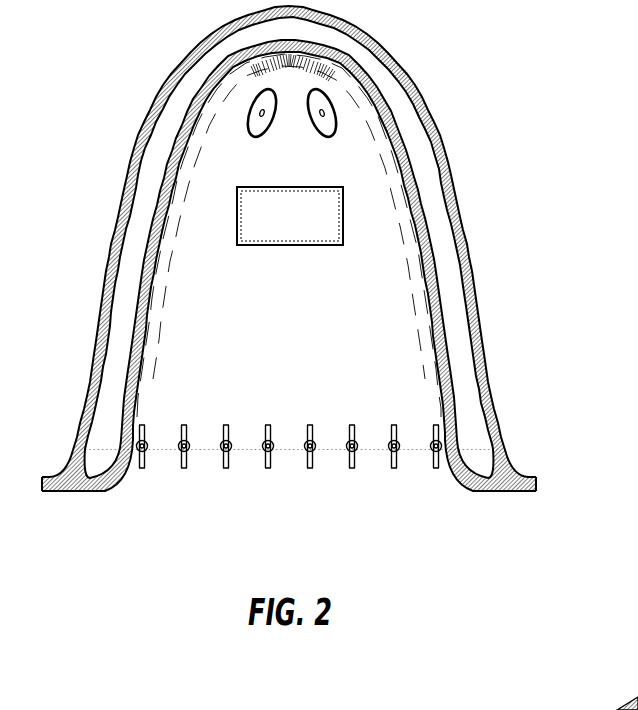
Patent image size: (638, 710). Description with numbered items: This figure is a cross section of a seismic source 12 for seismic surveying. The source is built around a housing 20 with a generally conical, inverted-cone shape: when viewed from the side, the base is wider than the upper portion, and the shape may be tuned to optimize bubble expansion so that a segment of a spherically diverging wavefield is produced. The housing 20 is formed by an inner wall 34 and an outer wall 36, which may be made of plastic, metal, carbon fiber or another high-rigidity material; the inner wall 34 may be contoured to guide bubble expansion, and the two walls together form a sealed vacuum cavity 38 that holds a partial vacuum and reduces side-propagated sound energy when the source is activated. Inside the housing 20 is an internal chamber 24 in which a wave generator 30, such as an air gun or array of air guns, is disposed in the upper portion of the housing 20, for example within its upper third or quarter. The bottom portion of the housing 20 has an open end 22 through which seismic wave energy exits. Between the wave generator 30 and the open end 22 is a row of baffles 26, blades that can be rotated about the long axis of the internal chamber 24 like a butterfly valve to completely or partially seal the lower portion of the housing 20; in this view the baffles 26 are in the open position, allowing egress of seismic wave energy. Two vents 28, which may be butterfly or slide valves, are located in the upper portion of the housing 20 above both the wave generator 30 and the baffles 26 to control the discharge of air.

The seismic source 12 is at (473, 68).
The housing 20 is at (162, 92).
The open end 22 is at (303, 507).
The internal chamber 24 is at (307, 369).
The baffles 26 is at (224, 444).
The vents 28 is at (264, 128).
The wave generator 30 is at (304, 227).
The inner wall 34 is at (445, 380).
The outer wall 36 is at (483, 355).
The vacuum cavity 38 is at (450, 290).